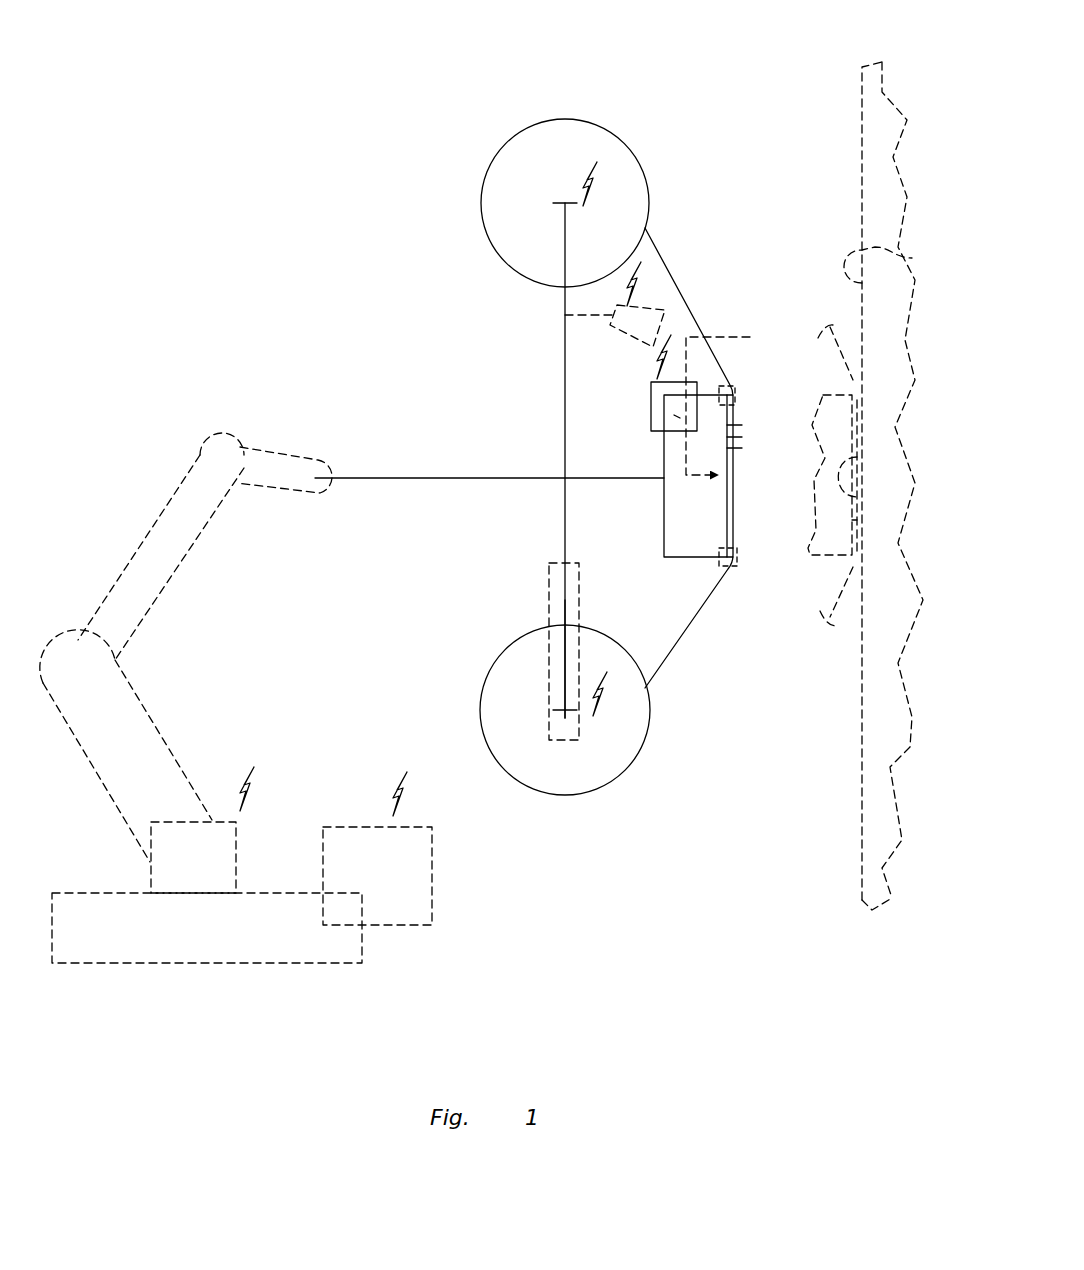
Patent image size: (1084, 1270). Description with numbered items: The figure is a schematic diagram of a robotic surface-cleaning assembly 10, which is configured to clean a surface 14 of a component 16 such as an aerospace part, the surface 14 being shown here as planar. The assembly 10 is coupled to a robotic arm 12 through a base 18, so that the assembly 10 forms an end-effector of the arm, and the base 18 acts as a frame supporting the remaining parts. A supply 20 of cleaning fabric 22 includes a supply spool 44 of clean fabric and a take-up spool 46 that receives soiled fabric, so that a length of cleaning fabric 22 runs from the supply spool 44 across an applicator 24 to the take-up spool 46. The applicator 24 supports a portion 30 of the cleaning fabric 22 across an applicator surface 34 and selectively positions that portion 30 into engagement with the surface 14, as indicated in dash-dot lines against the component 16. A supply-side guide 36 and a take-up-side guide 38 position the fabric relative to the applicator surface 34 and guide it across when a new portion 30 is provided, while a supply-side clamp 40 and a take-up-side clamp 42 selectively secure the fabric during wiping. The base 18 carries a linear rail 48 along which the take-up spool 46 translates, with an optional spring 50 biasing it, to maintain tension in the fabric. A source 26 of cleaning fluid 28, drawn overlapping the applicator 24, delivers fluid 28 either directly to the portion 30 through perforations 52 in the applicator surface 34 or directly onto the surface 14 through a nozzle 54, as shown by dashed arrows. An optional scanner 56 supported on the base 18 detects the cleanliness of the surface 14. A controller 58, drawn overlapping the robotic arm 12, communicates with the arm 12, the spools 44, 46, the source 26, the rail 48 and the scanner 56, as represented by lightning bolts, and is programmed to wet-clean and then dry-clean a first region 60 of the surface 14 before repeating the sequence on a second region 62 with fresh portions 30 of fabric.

The robotic surface-cleaning assembly 10 is at (736, 38).
The robotic arm 12 is at (154, 524).
The surface 14 is at (852, 153).
The component 16 is at (917, 363).
The base 18 is at (459, 472).
The supply of cleaning fabric 20 is at (575, 112).
The cleaning fabric 22 is at (686, 290).
The applicator 24 is at (678, 562).
The source of cleaning fluid 26 is at (651, 401).
The cleaning fluid 28 is at (774, 370).
The portion of cleaning fabric 30 is at (736, 484).
The applicator surface 34 is at (736, 519).
The supply-side guide 36 is at (738, 408).
The take-up-side guide 38 is at (742, 566).
The supply-side clamp 40 is at (740, 386).
The take-up-side clamp 42 is at (737, 570).
The supply spool 44 is at (643, 155).
The take-up spool 46 is at (600, 786).
The linear rail 48 is at (549, 590).
The spring 50 is at (575, 640).
The perforations 52 is at (680, 418).
The nozzle 54 is at (695, 388).
The scanner 56 is at (632, 340).
The controller 58 is at (432, 895).
The first region 60 is at (857, 497).
The second region 62 is at (912, 258).